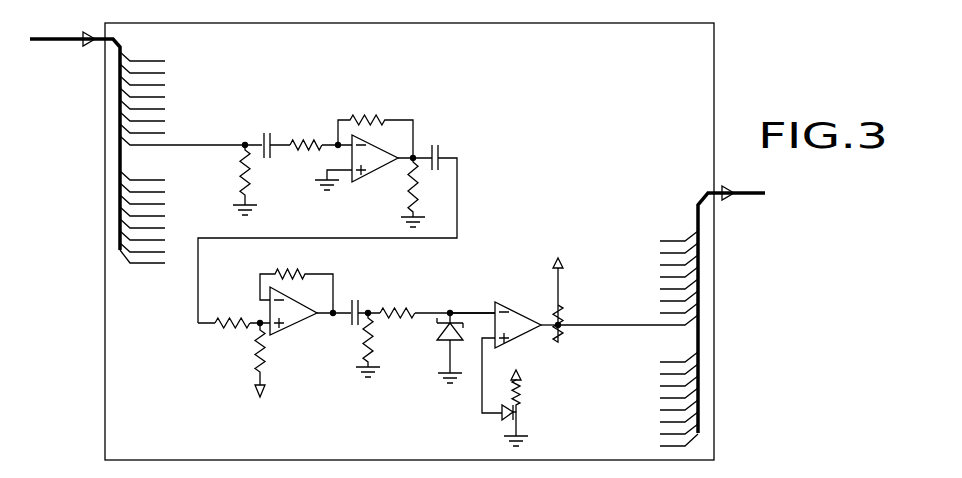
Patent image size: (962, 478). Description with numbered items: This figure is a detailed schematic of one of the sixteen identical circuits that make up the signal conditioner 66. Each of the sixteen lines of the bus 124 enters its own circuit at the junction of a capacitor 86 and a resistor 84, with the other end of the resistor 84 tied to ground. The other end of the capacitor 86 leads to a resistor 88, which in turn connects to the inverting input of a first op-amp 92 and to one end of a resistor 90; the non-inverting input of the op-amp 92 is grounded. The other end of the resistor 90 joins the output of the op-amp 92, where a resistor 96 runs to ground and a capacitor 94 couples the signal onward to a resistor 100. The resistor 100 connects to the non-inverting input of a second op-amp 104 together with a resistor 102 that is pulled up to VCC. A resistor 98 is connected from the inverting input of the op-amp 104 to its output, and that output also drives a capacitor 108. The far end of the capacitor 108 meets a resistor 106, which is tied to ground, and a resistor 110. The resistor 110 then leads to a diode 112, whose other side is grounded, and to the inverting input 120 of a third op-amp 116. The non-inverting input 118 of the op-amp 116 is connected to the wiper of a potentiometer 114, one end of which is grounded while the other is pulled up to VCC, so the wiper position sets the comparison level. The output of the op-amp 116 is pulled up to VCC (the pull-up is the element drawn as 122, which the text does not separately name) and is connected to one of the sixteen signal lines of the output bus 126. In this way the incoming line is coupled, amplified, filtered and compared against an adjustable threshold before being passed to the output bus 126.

The signal conditioner 66 is at (715, 98).
The resistor 84 is at (243, 163).
The capacitor 86 is at (263, 136).
The resistor 88 is at (312, 152).
The resistor 90 is at (357, 115).
The op-amp 92 is at (378, 160).
The capacitor 94 is at (438, 148).
The resistor 96 is at (415, 195).
The resistor 98 is at (290, 270).
The resistor 100 is at (228, 340).
The resistor 102 is at (255, 365).
The op-amp 104 is at (297, 315).
The resistor 106 is at (363, 352).
The capacitor 108 is at (363, 292).
The resistor 110 is at (400, 308).
The diode 112 is at (445, 331).
The potentiometer 114 is at (522, 410).
The op-amp 116 is at (516, 323).
The non-inverting input 118 is at (490, 340).
The inverting input 120 is at (495, 303).
The pull-up resistor 122 is at (563, 300).
The bus 124 is at (62, 43).
The output bus 126 is at (738, 197).